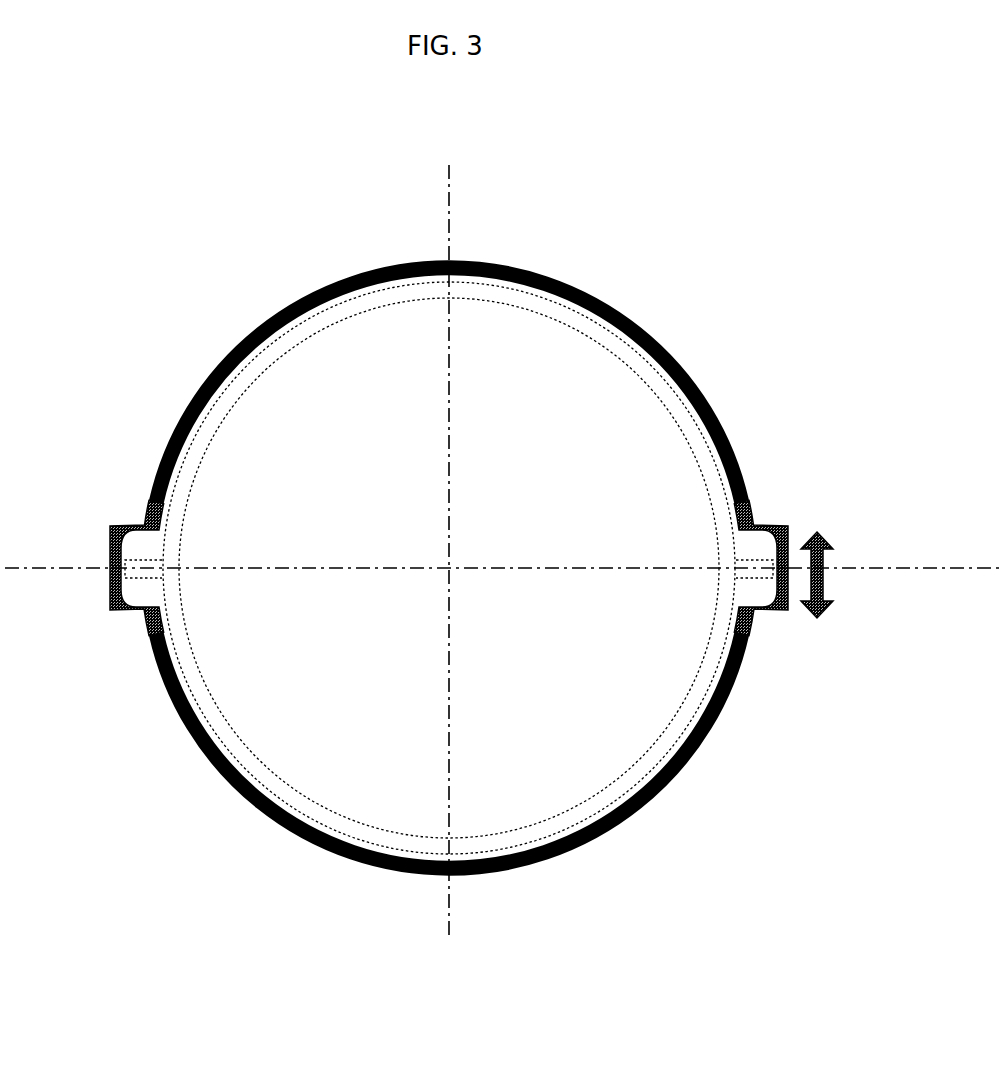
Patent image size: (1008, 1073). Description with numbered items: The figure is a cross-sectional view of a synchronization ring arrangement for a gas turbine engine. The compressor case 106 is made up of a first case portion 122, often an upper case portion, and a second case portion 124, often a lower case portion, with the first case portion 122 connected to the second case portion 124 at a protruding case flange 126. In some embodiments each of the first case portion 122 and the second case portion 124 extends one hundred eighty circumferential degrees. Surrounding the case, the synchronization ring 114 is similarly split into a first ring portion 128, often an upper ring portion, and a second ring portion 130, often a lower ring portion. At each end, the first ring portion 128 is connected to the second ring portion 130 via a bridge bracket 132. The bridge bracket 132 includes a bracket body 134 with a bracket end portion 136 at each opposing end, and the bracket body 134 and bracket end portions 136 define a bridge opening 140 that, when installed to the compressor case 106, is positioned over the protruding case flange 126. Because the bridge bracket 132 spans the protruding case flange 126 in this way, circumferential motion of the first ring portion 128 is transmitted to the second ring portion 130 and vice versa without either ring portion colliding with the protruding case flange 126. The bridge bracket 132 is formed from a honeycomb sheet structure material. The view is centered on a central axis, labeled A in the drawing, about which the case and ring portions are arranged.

The compressor case 106 is at (303, 333).
The synchronization ring 114 is at (583, 292).
The first case portion 122 is at (218, 402).
The second case portion 124 is at (255, 778).
The protruding case flange 126 is at (145, 558).
The first ring portion 128 is at (682, 367).
The second ring portion 130 is at (655, 800).
The bridge bracket 132 is at (793, 522).
The bracket body 134 is at (787, 553).
The bracket end portion 136 is at (747, 638).
The bridge opening 140 is at (758, 552).
The axis A is at (452, 569).